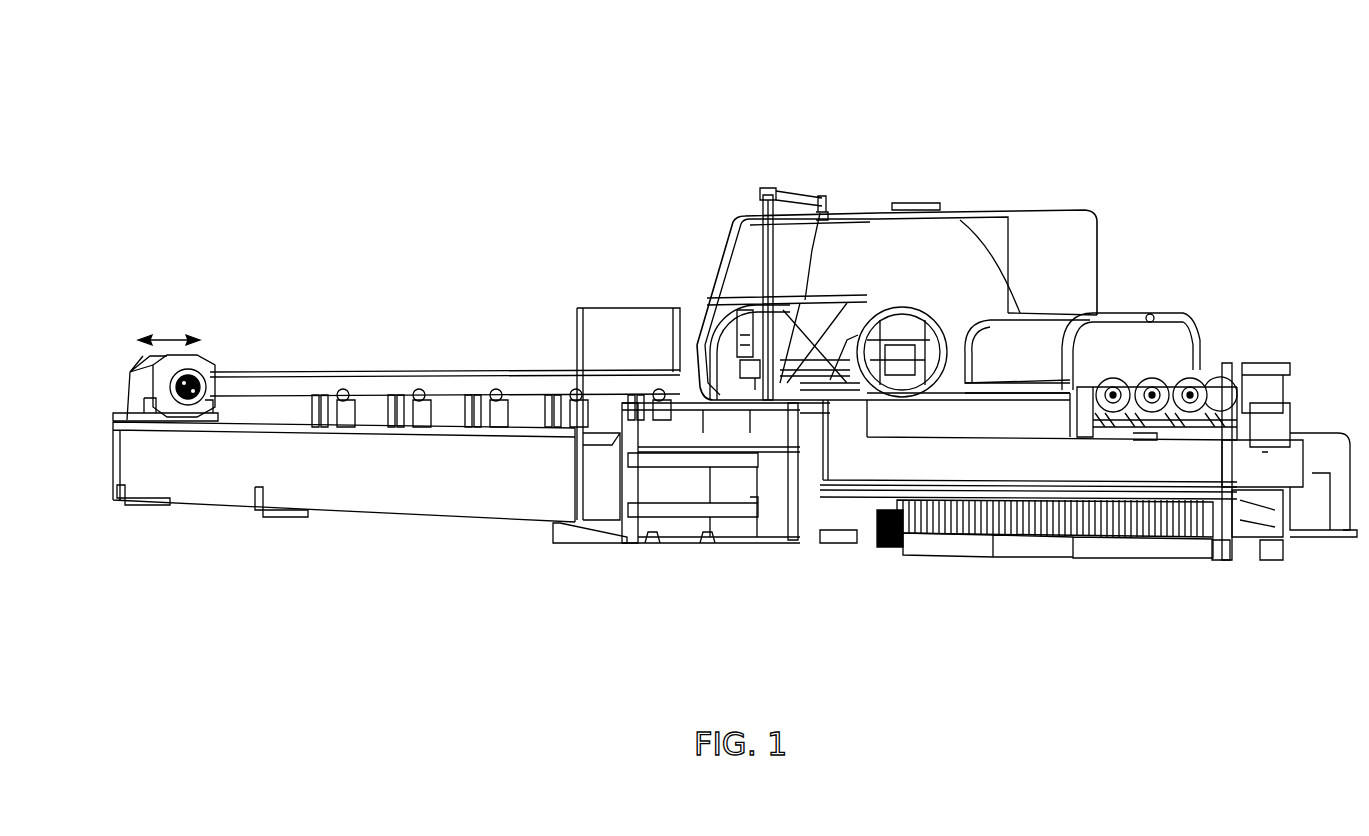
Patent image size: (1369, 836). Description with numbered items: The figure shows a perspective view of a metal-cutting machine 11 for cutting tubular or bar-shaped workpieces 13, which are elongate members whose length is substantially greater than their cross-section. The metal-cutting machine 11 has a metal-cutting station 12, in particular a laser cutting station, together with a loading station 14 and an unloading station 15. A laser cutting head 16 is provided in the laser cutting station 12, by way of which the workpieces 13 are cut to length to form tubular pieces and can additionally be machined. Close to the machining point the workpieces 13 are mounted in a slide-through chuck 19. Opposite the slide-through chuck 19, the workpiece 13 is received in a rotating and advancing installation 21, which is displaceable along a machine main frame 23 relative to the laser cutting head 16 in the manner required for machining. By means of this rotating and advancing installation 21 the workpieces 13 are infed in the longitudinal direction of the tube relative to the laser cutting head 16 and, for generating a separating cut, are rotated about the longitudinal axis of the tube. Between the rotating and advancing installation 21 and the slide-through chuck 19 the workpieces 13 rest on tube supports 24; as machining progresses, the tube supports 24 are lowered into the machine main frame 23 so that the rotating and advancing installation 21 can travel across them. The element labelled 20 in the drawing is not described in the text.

The metal-cutting machine 11 is at (1130, 113).
The metal-cutting station 12 is at (870, 195).
The tubular or bar-shaped workpiece 13 is at (497, 360).
The loading station 14 is at (388, 308).
The unloading station 15 is at (1226, 318).
The laser cutting head 16 is at (830, 325).
The slide-through chuck 19 is at (760, 303).
The chuck 20 is at (202, 382).
The rotating and advancing installation 21 is at (171, 323).
The machine main frame 23 is at (372, 520).
The tube supports 24 is at (341, 430).